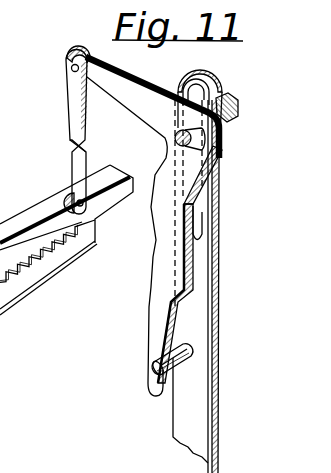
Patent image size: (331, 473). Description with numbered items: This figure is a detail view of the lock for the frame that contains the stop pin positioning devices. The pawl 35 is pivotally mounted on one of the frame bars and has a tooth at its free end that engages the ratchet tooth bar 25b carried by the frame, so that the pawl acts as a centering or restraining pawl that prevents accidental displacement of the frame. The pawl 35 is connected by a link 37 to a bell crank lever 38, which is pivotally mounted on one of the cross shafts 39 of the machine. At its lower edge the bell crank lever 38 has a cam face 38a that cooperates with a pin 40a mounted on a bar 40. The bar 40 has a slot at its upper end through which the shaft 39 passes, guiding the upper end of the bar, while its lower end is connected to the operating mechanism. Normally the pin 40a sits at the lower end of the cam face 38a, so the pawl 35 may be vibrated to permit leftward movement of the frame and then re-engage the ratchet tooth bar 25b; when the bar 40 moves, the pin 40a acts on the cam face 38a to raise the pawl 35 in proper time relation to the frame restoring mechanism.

The link 37 is at (70, 108).
The bell crank lever 38 is at (138, 107).
The cam face 38a is at (163, 340).
The cross shaft 39 is at (230, 97).
The bar 40 is at (178, 423).
The pin 40a is at (191, 357).
The pawl 35 is at (20, 238).
The ratchet tooth bar 25b is at (43, 273).